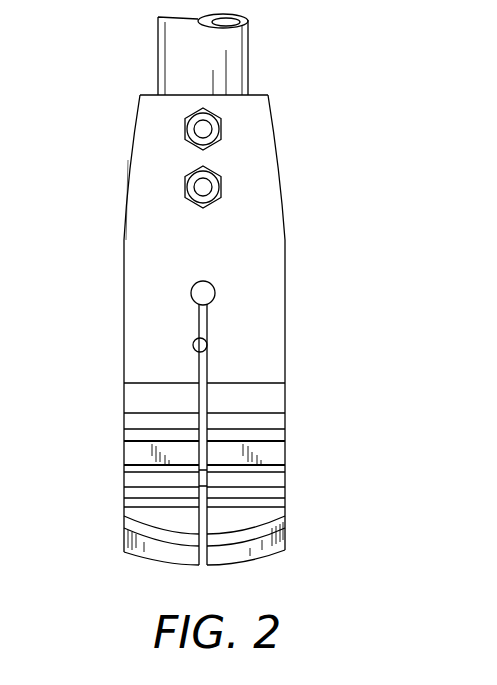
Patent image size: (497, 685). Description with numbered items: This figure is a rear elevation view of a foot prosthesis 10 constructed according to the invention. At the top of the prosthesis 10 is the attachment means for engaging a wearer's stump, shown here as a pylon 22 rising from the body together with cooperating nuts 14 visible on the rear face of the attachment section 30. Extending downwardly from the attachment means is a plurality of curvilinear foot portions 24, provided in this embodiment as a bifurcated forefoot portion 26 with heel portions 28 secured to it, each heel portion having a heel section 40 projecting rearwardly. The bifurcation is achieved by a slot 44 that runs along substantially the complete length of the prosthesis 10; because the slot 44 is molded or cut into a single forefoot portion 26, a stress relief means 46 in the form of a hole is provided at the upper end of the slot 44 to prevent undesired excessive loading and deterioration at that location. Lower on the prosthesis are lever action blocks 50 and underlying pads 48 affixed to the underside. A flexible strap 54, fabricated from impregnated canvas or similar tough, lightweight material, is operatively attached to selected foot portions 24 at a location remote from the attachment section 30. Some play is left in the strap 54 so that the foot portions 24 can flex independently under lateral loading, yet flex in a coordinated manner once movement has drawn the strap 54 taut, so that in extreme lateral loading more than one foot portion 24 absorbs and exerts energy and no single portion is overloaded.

The foot prosthesis 10 is at (201, 306).
The nuts 14 is at (193, 187).
The pylon 22 is at (177, 52).
The curvilinear foot portions 24 is at (116, 370).
The forefoot portion 26 is at (283, 213).
The heel portions 28 is at (135, 491).
The attachment section 30 is at (258, 152).
The heel section 40 is at (135, 510).
The slot 44 is at (205, 336).
The stress relief means 46 is at (192, 288).
The underlying pads 48 is at (187, 553).
The lever action blocks 50 is at (135, 455).
The strap 54 is at (200, 468).